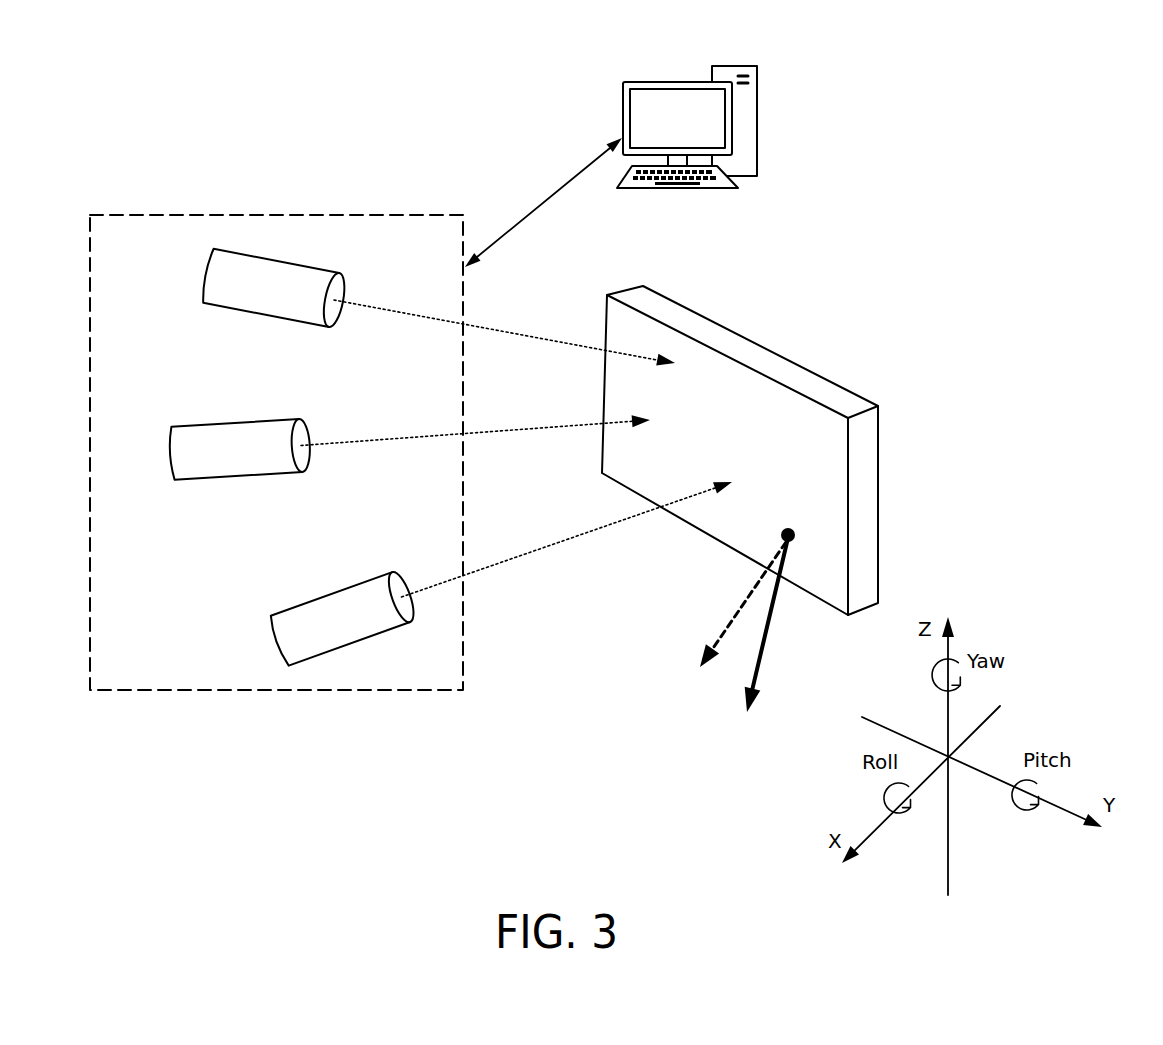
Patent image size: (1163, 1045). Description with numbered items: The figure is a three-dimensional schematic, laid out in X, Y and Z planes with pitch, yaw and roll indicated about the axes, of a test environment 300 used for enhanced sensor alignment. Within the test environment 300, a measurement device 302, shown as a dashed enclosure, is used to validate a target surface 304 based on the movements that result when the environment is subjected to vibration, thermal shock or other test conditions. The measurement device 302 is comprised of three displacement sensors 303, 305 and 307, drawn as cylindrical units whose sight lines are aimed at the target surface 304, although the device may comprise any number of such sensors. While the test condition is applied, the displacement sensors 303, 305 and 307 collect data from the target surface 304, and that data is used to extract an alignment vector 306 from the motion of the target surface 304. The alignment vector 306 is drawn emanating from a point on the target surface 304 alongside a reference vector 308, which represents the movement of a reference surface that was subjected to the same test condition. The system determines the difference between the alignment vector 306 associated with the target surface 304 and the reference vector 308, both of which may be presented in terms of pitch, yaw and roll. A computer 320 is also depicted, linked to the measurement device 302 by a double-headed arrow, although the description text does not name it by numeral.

The test environment 300 is at (1009, 43).
The measurement device 302 is at (430, 214).
The displacement sensor 303 is at (197, 278).
The target surface 304 is at (835, 381).
The displacement sensor 305 is at (164, 457).
The alignment vector 306 is at (756, 682).
The displacement sensor 307 is at (331, 594).
The reference vector 308 is at (706, 651).
The computer 320 is at (623, 113).